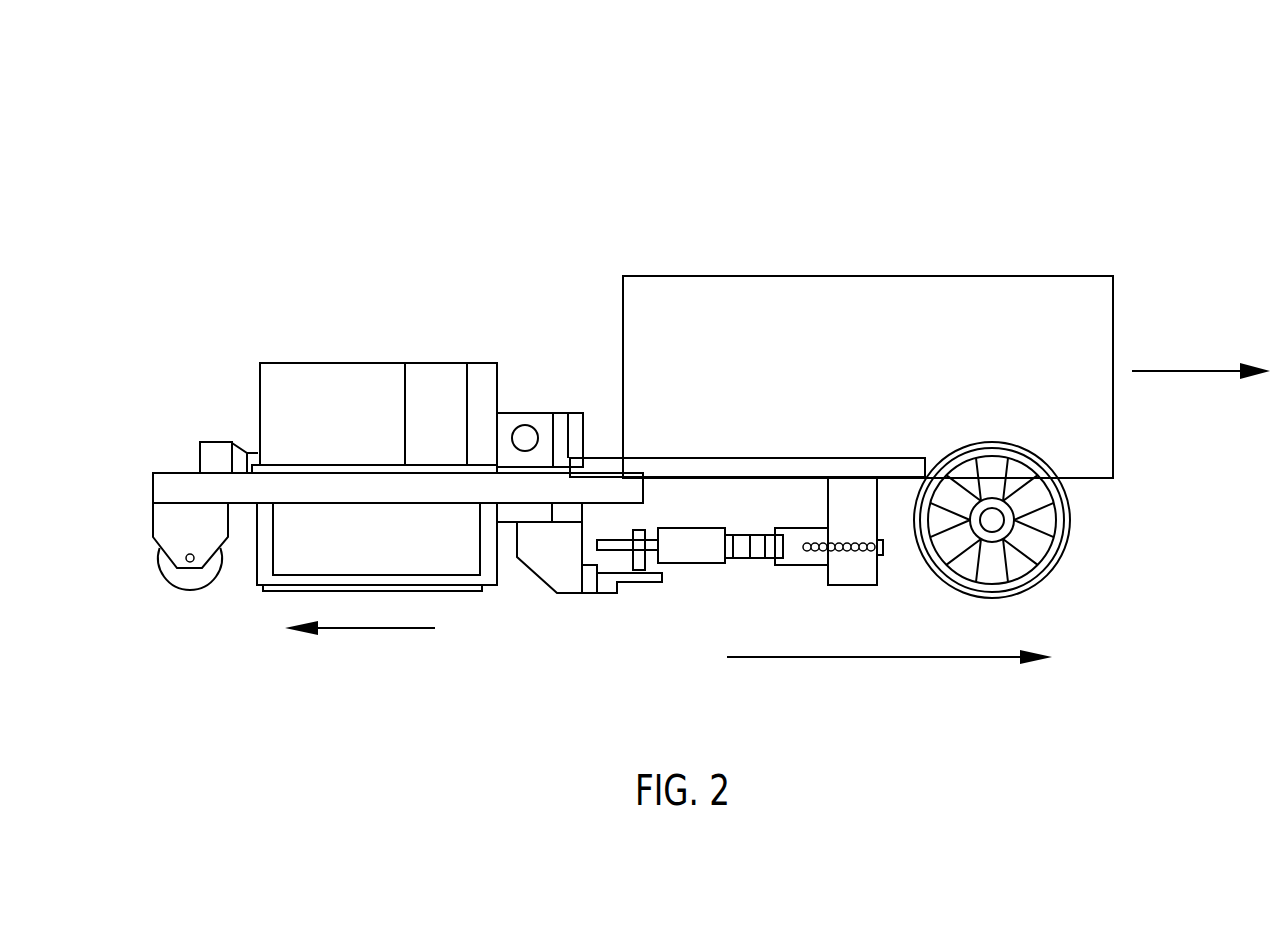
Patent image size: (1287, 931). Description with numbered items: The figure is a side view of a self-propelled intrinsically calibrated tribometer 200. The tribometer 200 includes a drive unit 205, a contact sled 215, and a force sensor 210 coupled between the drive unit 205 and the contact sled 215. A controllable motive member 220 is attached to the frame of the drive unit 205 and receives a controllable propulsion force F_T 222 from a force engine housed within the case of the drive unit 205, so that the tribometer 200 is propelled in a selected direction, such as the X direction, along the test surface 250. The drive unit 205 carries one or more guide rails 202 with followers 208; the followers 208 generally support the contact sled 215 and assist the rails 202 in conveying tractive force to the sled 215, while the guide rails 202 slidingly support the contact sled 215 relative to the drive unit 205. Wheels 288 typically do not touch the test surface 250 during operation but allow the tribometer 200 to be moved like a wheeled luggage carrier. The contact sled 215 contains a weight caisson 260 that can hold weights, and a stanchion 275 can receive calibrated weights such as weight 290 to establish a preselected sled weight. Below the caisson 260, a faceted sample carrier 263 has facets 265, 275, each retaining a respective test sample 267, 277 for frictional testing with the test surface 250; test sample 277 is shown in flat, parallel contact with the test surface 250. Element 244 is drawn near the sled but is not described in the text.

The intrinsically calibrated tribometer 200 is at (856, 182).
The guide rails 202 is at (702, 478).
The drive unit 205 is at (1041, 276).
The followers 208 is at (178, 470).
The force sensor 210 is at (694, 565).
The contact sled 215 is at (474, 354).
The controllable motive member 220 is at (1063, 546).
The propulsion force F_T 222 is at (1182, 374).
The stop block 244 is at (218, 441).
The test surface 250 is at (876, 660).
The weight caisson 260 is at (329, 363).
The faceted sample carrier 263 is at (255, 560).
The facet 265 is at (263, 586).
The test sample 267 is at (377, 544).
The stanchion 275 is at (487, 592).
The test sample 277 is at (450, 592).
The wheels 288 is at (160, 570).
The weight 290 is at (499, 378).